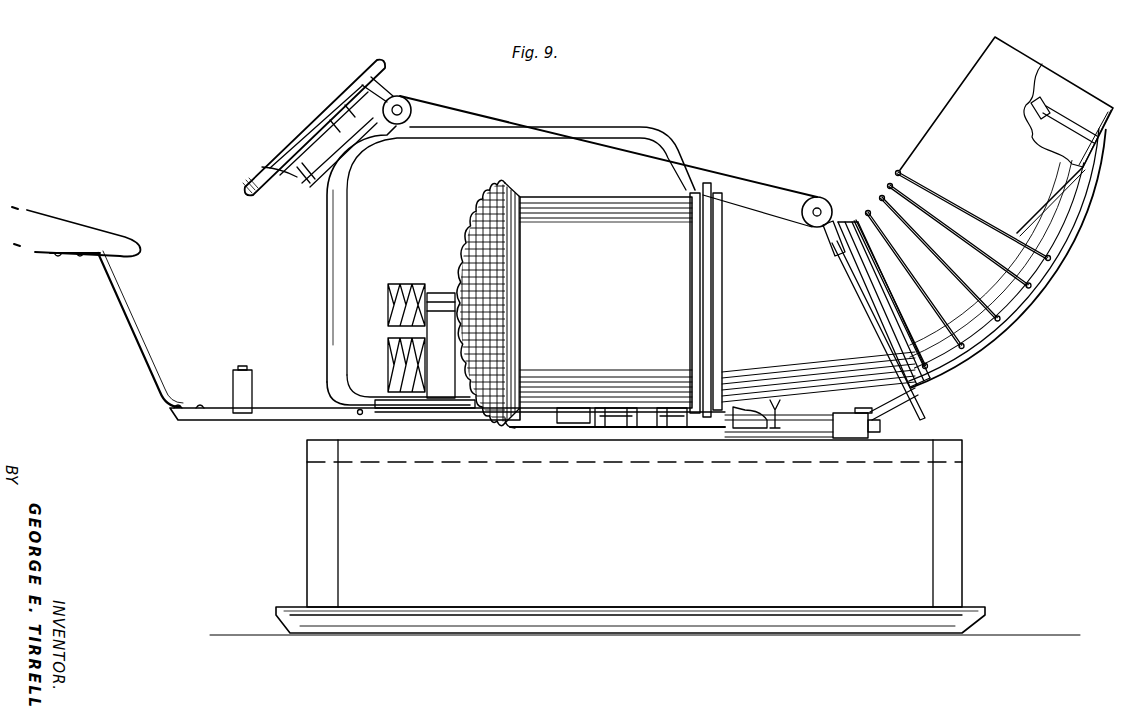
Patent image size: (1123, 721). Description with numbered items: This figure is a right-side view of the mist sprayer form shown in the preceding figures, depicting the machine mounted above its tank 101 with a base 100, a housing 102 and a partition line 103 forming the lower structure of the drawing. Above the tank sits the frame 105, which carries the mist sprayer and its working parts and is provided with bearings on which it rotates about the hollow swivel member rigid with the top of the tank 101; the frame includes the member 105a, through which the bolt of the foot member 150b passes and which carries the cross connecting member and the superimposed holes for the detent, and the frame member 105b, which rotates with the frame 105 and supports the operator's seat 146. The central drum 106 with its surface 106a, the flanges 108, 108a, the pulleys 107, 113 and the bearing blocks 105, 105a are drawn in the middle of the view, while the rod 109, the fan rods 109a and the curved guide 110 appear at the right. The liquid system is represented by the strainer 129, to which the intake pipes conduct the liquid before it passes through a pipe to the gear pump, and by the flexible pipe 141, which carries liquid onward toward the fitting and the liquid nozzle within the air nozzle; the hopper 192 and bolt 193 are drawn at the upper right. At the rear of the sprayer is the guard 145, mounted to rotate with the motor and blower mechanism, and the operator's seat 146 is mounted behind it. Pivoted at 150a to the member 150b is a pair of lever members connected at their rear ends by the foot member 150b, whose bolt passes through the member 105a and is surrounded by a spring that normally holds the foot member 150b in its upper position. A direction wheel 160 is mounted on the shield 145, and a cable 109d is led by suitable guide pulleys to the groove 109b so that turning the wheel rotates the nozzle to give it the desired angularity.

The base platform 100 is at (898, 625).
The tank 101 is at (722, 600).
The housing box 102 is at (314, 521).
The partition line 103 is at (435, 455).
The frame 105 is at (620, 430).
The member 105a is at (686, 430).
The frame member 105b is at (208, 426).
The drum 106 is at (622, 200).
The drum surface 106a is at (690, 214).
The pulleys 107 is at (419, 283).
The drum flange 108 is at (770, 200).
The drum flange ring 108a is at (716, 224).
The support rod 109 is at (917, 387).
The fan rods 109a is at (930, 373).
The groove 109b is at (843, 216).
The cable 109d is at (798, 176).
The curved guide 110 is at (970, 327).
The lower pulleys 113 is at (412, 367).
The strainer 129 is at (853, 432).
The flexible pipe 141 is at (1043, 291).
The guard 145 is at (328, 214).
The operator's seat 146 is at (143, 213).
The pivot 150a is at (360, 415).
The foot member 150b is at (248, 390).
The direction wheel 160 is at (386, 62).
The hopper 192 is at (1072, 160).
The bolt 193 is at (1043, 106).